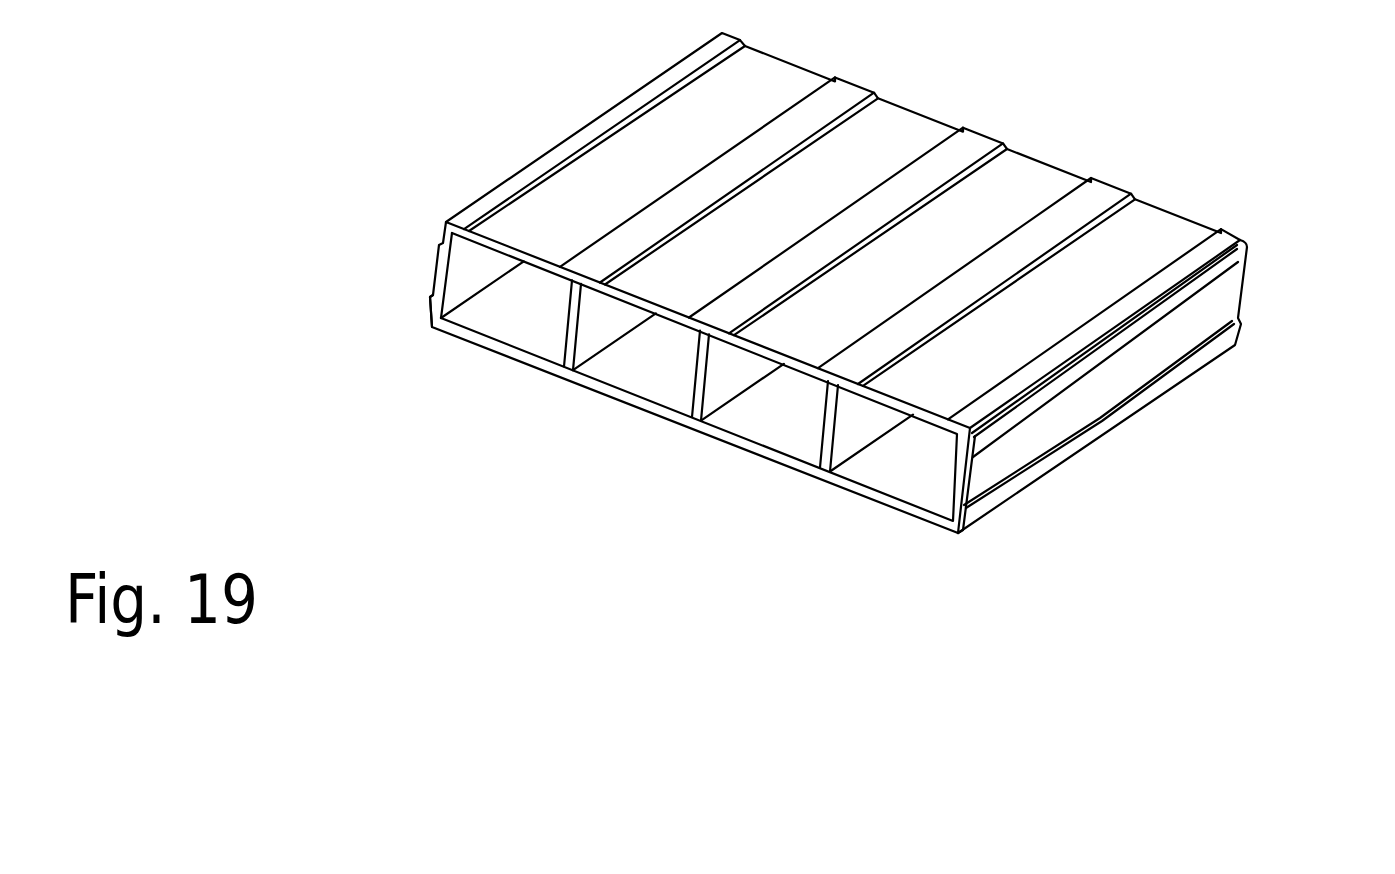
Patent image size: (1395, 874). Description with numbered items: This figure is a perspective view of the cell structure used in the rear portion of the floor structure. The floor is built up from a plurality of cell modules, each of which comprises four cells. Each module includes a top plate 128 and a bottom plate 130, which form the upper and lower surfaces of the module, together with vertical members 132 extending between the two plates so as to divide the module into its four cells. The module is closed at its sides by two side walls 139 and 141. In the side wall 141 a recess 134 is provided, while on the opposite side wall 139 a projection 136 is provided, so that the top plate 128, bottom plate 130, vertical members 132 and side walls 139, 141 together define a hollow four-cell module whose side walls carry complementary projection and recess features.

The top plate 128 is at (1135, 243).
The bottom plate 130 is at (772, 425).
The vertical members 132 is at (566, 364).
The recess 134 is at (1252, 292).
The projection 136 is at (435, 265).
The side wall 139 is at (435, 308).
The side wall 141 is at (985, 506).